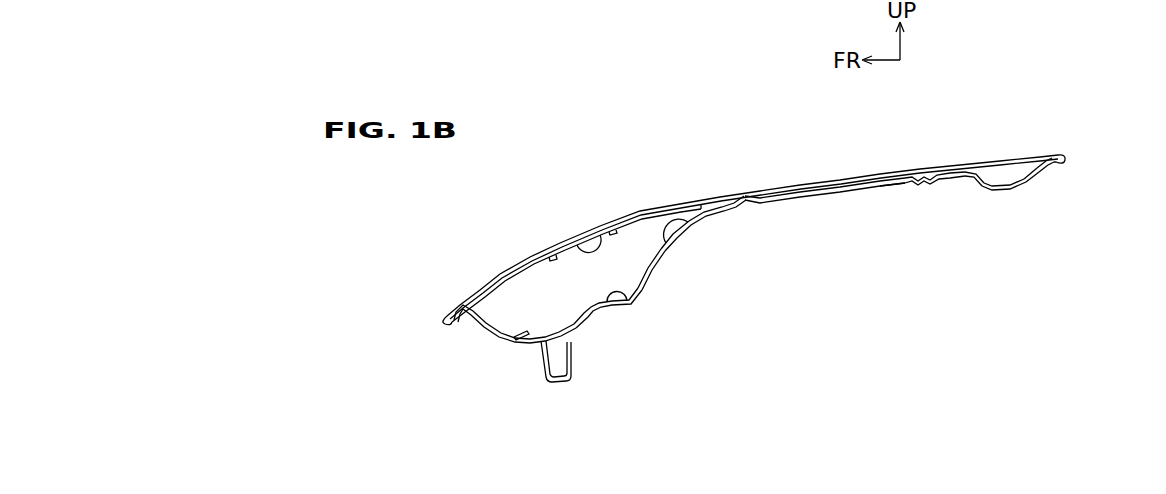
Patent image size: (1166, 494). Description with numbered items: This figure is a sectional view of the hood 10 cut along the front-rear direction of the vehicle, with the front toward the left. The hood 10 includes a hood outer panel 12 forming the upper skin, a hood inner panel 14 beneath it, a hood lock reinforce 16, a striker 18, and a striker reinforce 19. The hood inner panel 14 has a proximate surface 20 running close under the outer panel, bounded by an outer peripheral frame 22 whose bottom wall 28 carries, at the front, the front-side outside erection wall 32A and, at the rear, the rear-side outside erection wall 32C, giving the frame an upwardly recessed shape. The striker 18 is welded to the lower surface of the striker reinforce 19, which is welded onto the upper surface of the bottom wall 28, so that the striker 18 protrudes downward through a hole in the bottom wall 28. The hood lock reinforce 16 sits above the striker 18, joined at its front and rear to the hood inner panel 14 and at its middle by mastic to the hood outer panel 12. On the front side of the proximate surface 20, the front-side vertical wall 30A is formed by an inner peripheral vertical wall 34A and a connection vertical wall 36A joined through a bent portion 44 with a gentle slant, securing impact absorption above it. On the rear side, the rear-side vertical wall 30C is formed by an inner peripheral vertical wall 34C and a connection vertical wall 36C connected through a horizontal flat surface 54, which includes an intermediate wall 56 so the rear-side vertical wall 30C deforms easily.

The hood 10 is at (667, 82).
The hood outer panel 12 is at (737, 190).
The hood inner panel 14 is at (890, 187).
The hood lock reinforce 16 is at (565, 235).
The striker 18 is at (574, 378).
The striker reinforce 19 is at (572, 320).
The proximate surface 20 is at (756, 206).
The outer peripheral frame 22 is at (520, 338).
The bottom wall 28 is at (630, 301).
The front-side vertical wall 30A is at (653, 238).
The rear-side vertical wall 30C is at (985, 190).
The front-side outside erection wall 32A is at (468, 295).
The rear-side outside erection wall 32C is at (1038, 162).
The inner peripheral vertical wall 34A is at (643, 291).
The inner peripheral vertical wall 34C is at (983, 168).
The connection vertical wall 36A is at (683, 232).
The connection vertical wall 36C is at (947, 170).
The bent portion 44 is at (650, 270).
The flat surface 54 is at (973, 172).
The intermediate wall 56 is at (973, 172).